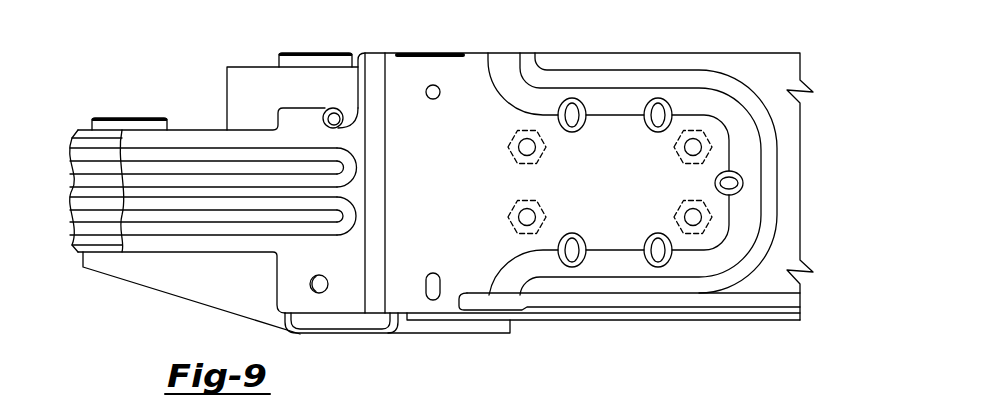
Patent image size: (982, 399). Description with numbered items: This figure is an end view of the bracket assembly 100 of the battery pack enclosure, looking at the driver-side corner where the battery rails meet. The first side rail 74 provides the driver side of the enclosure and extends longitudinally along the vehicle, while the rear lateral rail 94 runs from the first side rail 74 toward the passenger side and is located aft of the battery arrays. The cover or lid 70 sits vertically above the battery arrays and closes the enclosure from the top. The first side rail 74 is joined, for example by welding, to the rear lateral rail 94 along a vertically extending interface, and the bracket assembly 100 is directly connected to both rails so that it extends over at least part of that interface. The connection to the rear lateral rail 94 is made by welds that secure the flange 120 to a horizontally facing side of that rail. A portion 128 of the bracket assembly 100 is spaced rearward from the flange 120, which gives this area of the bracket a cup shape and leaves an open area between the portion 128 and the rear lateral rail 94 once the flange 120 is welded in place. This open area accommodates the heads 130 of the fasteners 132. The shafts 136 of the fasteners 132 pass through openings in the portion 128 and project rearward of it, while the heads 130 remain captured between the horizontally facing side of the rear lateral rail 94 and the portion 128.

The cover or lid 70 is at (420, 50).
The first side rail 74 is at (90, 130).
The rear lateral rail 94 is at (787, 209).
The bracket assembly 100 is at (472, 83).
The flange 120 is at (745, 137).
The portion 128 is at (621, 213).
The heads 130 is at (512, 220).
The fasteners 132 is at (693, 147).
The shafts 136 is at (527, 147).